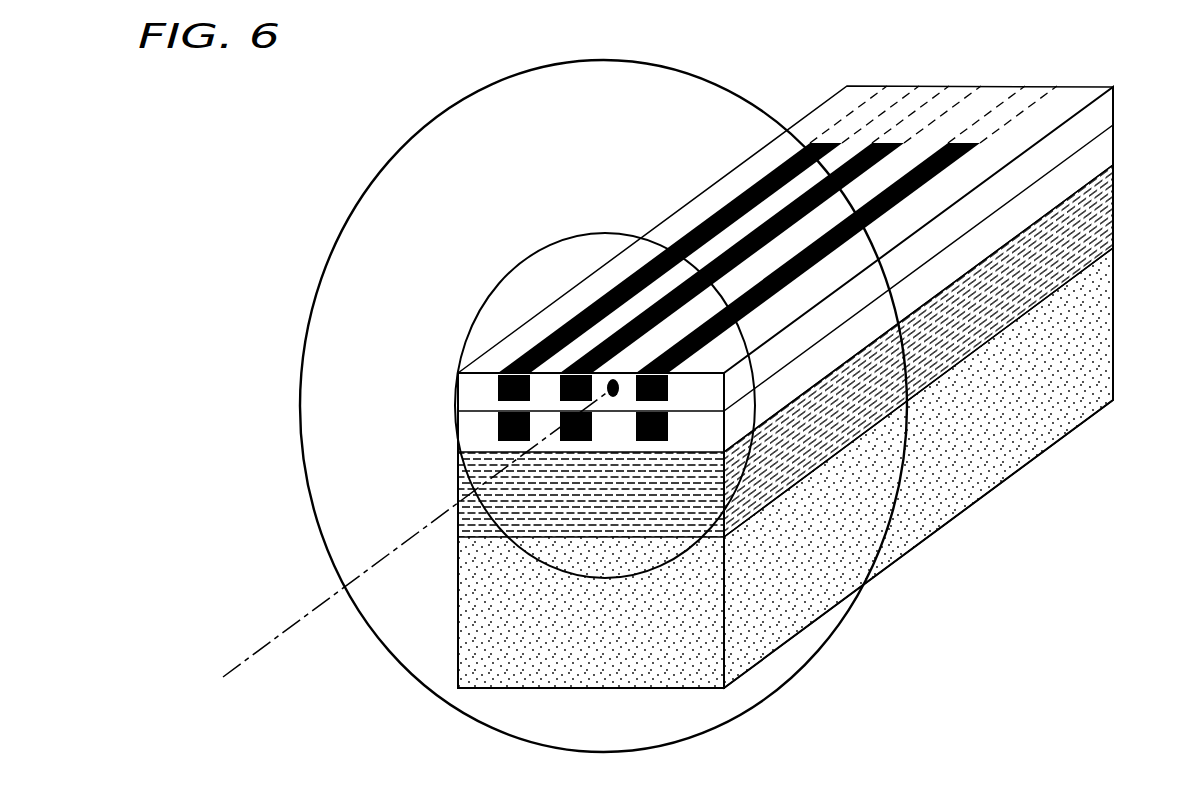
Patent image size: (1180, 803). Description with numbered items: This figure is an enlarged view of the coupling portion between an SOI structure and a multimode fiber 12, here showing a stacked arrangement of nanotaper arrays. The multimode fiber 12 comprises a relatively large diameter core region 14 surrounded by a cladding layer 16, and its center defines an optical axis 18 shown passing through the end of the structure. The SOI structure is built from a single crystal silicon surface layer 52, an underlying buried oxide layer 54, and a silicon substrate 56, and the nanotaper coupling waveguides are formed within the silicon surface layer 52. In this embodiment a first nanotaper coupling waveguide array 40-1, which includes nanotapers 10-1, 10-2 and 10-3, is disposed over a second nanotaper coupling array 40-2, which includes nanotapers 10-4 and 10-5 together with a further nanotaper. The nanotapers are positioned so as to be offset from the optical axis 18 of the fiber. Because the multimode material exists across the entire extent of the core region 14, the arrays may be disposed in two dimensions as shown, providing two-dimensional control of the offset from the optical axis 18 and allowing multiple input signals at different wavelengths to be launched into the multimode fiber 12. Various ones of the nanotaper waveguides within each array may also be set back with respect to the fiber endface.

The nanotaper coupling waveguide 10-1 is at (697, 229).
The nanotaper coupling waveguide 10-2 is at (767, 228).
The nanotaper coupling waveguide 10-3 is at (833, 231).
The nanotaper coupling waveguide 10-4 is at (512, 430).
The nanotaper coupling waveguide 10-5 is at (578, 421).
The multimode fiber 12 is at (313, 289).
The core region 14 is at (498, 316).
The cladding layer 16 is at (466, 121).
The optical axis 18 is at (254, 656).
The first nanotaper coupling waveguide array 40-1 is at (826, 116).
The second nanotaper coupling array 40-2 is at (450, 428).
The single crystal silicon surface layer 52 is at (1122, 87).
The buried oxide layer 54 is at (1113, 216).
The silicon substrate 56 is at (1113, 331).